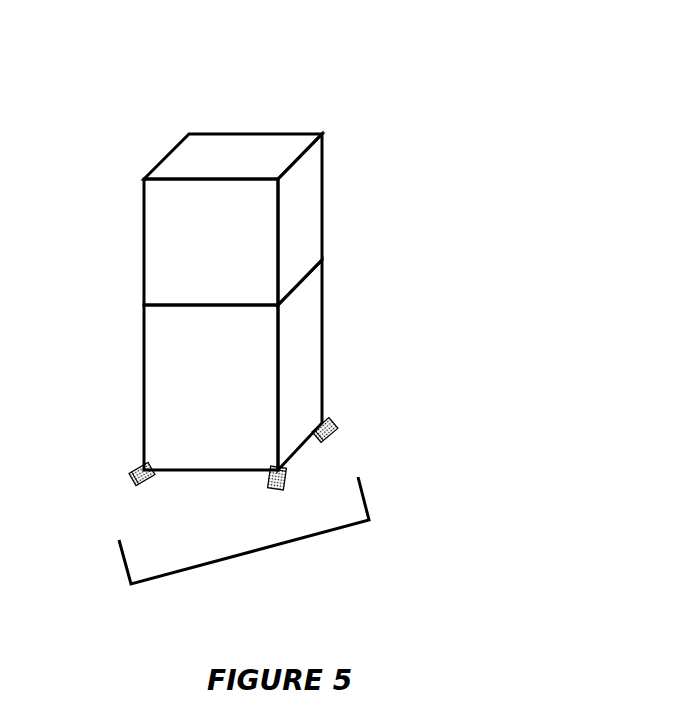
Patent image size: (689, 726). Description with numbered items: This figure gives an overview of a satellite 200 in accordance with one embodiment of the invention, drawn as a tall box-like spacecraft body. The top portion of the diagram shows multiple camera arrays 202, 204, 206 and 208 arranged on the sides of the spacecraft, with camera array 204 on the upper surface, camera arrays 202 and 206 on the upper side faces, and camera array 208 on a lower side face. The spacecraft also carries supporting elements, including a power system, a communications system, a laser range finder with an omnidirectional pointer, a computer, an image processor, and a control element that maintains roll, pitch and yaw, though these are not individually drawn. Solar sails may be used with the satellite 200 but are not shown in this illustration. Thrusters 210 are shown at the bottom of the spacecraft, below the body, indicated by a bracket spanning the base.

The satellite 200 is at (186, 251).
The camera array 202 is at (367, 200).
The camera array 204 is at (241, 123).
The camera array 206 is at (156, 320).
The camera array 208 is at (367, 365).
The thrusters 210 is at (244, 530).